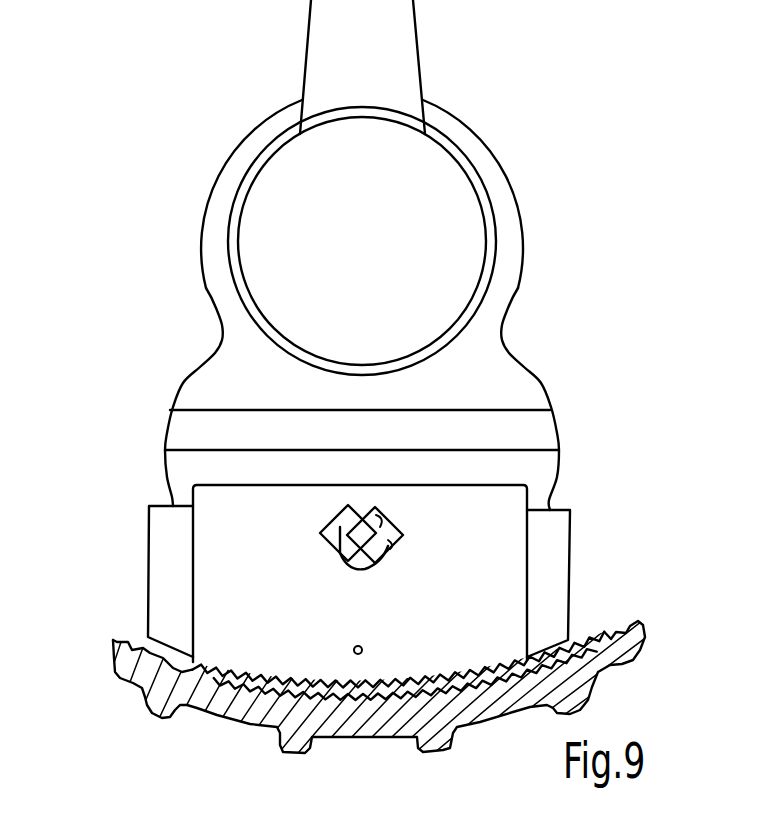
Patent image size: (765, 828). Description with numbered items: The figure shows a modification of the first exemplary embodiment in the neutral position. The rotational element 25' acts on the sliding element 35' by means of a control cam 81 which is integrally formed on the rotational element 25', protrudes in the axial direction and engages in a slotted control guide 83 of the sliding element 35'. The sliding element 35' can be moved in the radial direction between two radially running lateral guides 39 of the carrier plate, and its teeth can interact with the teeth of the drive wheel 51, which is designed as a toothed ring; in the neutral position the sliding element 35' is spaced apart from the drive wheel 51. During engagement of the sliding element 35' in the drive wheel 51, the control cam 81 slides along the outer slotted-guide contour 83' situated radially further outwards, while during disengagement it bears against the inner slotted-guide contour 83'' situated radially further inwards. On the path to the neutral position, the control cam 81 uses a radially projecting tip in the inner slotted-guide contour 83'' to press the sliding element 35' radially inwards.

The rotational element 25' is at (410, 255).
The sliding element 35' is at (294, 560).
The lateral guides 39 is at (167, 613).
The control cam 81 is at (362, 550).
The slotted control guide 83 is at (231, 455).
The outer slotted-guide contour 83' is at (524, 496).
The inner slotted-guide contour 83'' is at (516, 462).
The drive wheel 51 is at (355, 713).